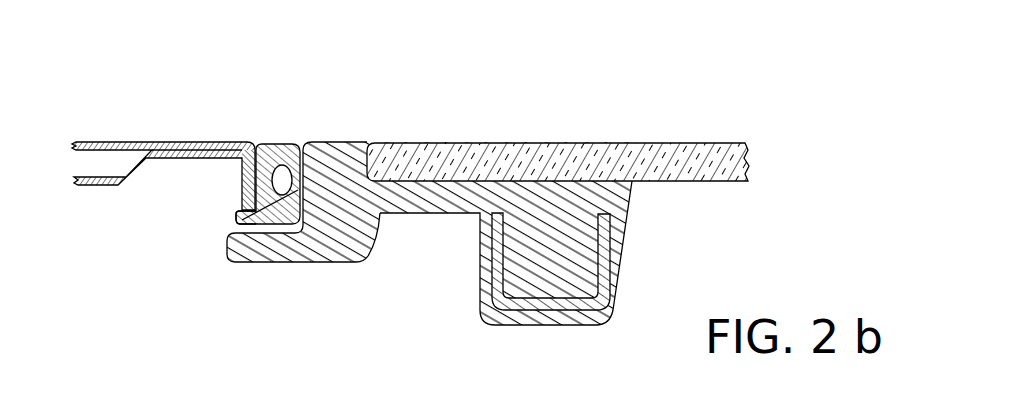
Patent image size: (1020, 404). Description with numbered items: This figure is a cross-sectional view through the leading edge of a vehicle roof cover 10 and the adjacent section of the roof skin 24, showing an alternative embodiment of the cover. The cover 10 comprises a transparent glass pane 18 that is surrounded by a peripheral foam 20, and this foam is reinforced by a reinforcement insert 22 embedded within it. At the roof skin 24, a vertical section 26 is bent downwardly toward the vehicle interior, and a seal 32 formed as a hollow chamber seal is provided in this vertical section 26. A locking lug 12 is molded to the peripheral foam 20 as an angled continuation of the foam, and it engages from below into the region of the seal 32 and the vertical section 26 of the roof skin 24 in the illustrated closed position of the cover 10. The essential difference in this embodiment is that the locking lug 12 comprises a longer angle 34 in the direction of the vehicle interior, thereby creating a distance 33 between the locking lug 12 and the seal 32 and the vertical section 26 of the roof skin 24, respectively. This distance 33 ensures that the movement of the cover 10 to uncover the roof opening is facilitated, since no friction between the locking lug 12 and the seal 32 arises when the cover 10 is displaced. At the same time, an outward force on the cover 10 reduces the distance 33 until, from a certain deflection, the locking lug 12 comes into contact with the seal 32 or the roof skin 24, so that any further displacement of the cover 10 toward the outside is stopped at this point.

The cover 10 is at (503, 127).
The locking lug 12 is at (268, 250).
The transparent glass pane 18 is at (678, 160).
The peripheral foam 20 is at (424, 214).
The reinforcement insert 22 is at (540, 304).
The roof skin 24 is at (173, 141).
The vertical section 26 is at (273, 146).
The seal 32 is at (288, 156).
The distance 33 is at (253, 227).
The longer angle 34 is at (374, 258).